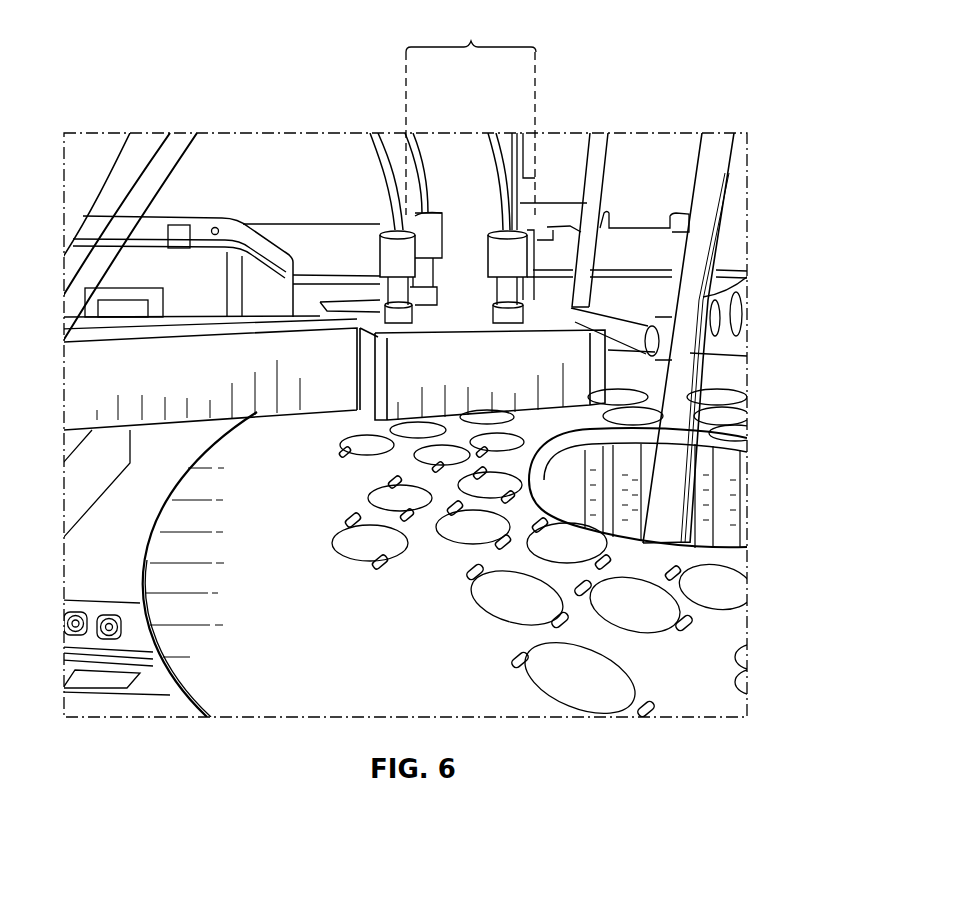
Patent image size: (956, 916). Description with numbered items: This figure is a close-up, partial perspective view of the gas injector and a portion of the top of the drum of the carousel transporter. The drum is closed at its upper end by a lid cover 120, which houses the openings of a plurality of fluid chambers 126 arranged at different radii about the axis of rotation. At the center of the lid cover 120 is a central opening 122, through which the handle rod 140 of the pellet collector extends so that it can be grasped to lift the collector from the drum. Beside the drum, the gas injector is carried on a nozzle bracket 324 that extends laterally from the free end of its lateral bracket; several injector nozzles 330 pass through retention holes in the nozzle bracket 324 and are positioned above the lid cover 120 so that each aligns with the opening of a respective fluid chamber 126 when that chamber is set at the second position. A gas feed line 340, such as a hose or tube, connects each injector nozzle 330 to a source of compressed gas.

The lid cover 120 is at (153, 551).
The central opening 122 is at (735, 494).
The fluid chamber 126 is at (337, 535).
The handle rod 140 is at (703, 295).
The nozzle bracket 324 is at (173, 414).
The injector nozzle 330 is at (435, 168).
The gas feed line 340 is at (377, 137).